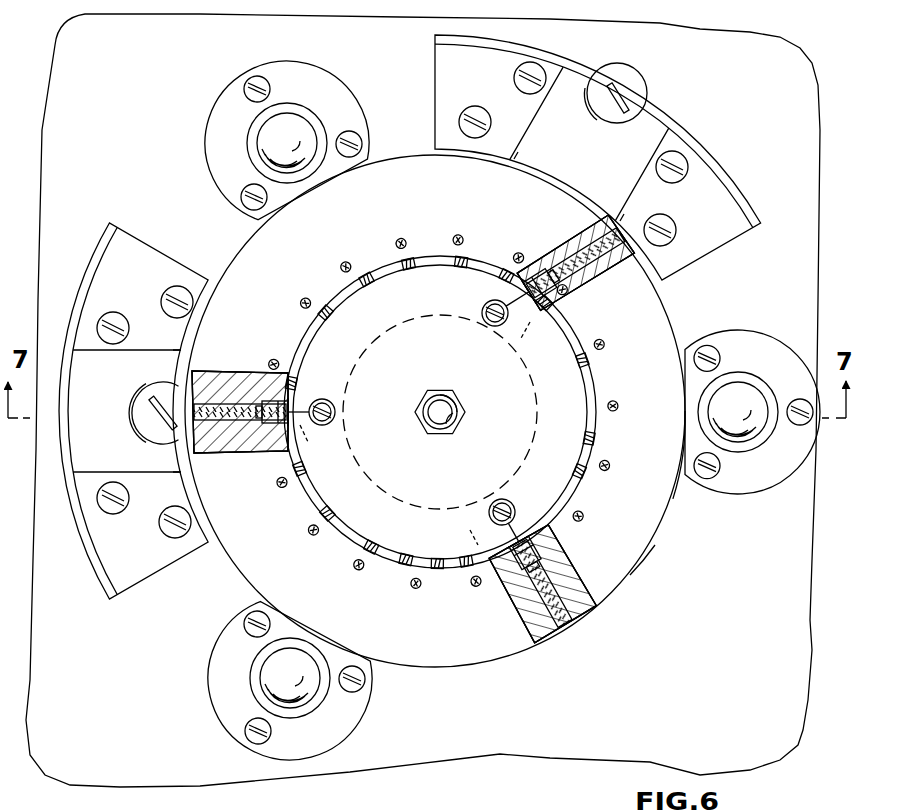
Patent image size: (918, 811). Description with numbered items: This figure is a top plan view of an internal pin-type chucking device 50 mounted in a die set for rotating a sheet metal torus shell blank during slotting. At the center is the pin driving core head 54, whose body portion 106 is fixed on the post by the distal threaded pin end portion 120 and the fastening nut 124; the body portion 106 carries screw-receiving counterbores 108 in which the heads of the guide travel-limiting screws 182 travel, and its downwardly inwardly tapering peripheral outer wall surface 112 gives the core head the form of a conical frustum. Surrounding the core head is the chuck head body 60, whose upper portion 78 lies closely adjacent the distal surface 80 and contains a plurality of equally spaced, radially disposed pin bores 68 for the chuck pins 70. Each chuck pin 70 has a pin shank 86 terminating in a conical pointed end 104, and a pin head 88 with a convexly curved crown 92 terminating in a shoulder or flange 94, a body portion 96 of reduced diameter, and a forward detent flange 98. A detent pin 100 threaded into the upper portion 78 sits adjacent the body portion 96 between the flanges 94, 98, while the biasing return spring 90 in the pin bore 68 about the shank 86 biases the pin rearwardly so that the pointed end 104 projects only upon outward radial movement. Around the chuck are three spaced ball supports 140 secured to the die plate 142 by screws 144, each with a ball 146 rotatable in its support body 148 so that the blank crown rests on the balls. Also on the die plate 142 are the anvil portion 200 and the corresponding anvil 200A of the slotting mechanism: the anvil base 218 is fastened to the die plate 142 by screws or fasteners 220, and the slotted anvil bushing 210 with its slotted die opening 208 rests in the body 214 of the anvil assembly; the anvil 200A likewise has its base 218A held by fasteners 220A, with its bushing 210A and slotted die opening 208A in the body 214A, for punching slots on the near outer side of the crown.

The internal pin-type chucking device 50 is at (630, 575).
The pin driving core head 54 is at (597, 436).
The body 60 is at (648, 288).
The pin bores 68 is at (268, 398).
The chuck pins 70 is at (232, 386).
The upper portion 78 is at (650, 553).
The distal surface 80 is at (655, 318).
The pin shank 86 is at (232, 396).
The pin head 88 is at (326, 401).
The biasing return spring 90 is at (216, 408).
The convexly curved crown 92 is at (421, 433).
The shoulder or flange 94 is at (372, 283).
The body portion 96 is at (272, 427).
The forward detent flange 98 is at (262, 427).
The detent pin 100 is at (336, 265).
The conical pointed end 104 is at (245, 433).
The body portion 106 is at (568, 487).
The screw-receiving counterbores 108 is at (342, 418).
The peripheral outer wall surface 112 is at (332, 806).
The distal threaded pin end portion 120 is at (442, 402).
The fastening nut 124 is at (459, 418).
The ball supports 140 is at (290, 61).
The die plate 142 is at (800, 548).
The screws 144 is at (260, 79).
The balls 146 is at (257, 143).
The support bodies 148 is at (316, 116).
The guide travel-limiting screws 182 is at (352, 407).
The anvil portion 200 is at (82, 298).
The anvil 200A is at (700, 134).
The slotted die opening 208 is at (152, 392).
The slotted die opening 208A is at (607, 92).
The anvil bushing 210 is at (148, 416).
The anvil bushing 210A is at (636, 108).
The body 214 is at (93, 455).
The body 214A is at (653, 128).
The anvil base 218 is at (152, 253).
The anvil base 218A is at (730, 208).
The screws or fasteners 220 is at (163, 305).
The screws or fasteners 220A is at (516, 78).